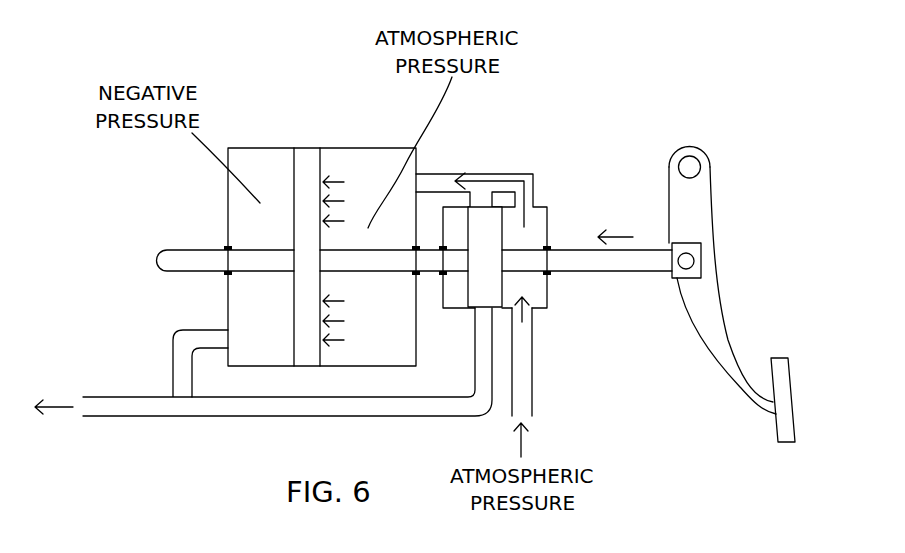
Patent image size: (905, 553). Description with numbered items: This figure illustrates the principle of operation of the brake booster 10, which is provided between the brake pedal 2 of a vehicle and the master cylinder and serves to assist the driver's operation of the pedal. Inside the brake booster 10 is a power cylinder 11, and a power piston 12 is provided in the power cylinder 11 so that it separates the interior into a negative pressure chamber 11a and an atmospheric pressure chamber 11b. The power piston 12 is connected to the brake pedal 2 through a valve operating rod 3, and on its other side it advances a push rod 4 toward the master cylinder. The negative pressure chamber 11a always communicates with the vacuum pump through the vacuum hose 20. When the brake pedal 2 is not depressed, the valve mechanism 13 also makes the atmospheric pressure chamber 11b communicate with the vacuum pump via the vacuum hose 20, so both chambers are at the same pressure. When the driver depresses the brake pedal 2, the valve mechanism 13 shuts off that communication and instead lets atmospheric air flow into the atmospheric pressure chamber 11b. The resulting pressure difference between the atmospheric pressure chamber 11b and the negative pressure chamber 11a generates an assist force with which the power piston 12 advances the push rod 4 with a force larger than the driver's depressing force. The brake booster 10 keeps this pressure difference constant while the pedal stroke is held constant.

The brake pedal 2 is at (793, 381).
The valve operating rod 3 is at (612, 272).
The push rod 4 is at (183, 249).
The brake booster 10 is at (488, 120).
The power cylinder 11 is at (227, 298).
The negative pressure chamber 11a is at (250, 158).
The atmospheric pressure chamber 11b is at (367, 157).
The power piston 12 is at (294, 165).
The valve mechanism 13 is at (547, 214).
The vacuum hose 20 is at (109, 397).